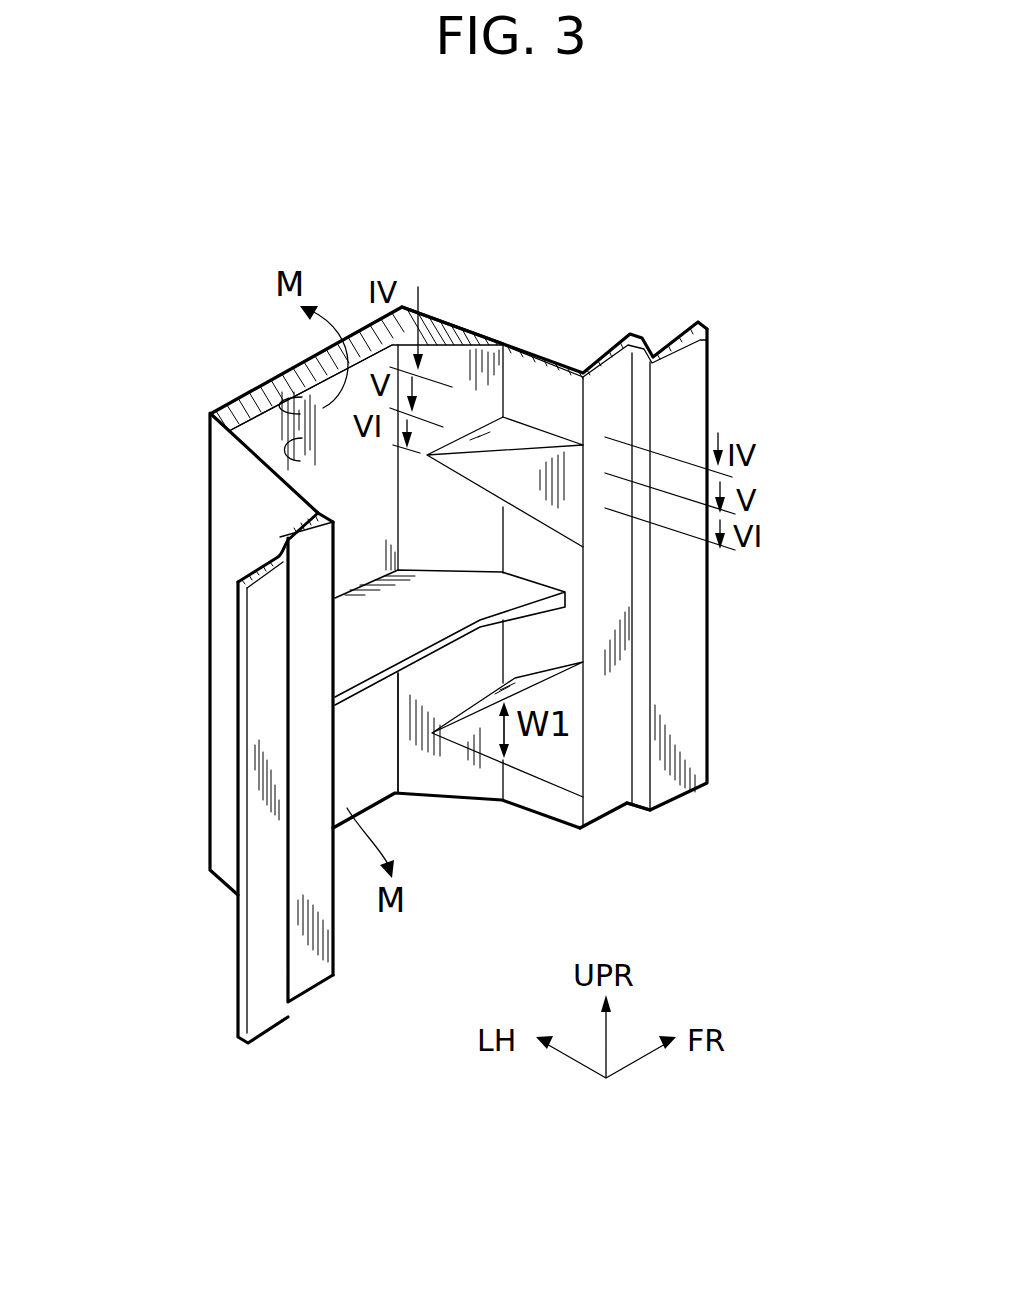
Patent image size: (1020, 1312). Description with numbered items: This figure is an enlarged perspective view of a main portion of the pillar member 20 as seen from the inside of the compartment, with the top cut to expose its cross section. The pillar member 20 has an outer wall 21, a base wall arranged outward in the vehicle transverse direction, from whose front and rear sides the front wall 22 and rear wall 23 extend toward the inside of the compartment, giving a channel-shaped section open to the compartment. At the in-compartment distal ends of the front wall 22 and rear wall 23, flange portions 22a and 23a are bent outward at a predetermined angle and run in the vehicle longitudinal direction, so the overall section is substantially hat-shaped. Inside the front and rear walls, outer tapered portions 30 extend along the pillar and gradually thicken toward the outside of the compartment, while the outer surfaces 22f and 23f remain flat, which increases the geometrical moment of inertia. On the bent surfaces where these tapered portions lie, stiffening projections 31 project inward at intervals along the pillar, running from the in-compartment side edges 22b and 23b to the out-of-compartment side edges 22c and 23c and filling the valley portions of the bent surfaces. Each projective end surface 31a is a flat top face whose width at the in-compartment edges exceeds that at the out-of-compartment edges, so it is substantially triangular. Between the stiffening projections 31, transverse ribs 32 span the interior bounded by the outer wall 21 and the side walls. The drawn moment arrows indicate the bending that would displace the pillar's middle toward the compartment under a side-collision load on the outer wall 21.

The pillar member 20 is at (646, 290).
The outer wall 21 is at (310, 402).
The front wall 22 is at (490, 336).
The flange portion 22a is at (687, 720).
The in-compartment side edge 22b is at (590, 782).
The out-of-compartment side edge 22c is at (400, 725).
The outer surface 22f is at (472, 322).
The rear wall 23 is at (227, 560).
The flange portion 23a is at (262, 1022).
The in-compartment side edge 23b is at (308, 972).
The out-of-compartment side edge 23c is at (293, 400).
The outer surface 23f is at (223, 618).
The outer tapered portion 30 is at (290, 458).
The stiffening projection 31 is at (542, 528).
The projective end surface 31a is at (545, 462).
The transverse rib 32 is at (343, 657).